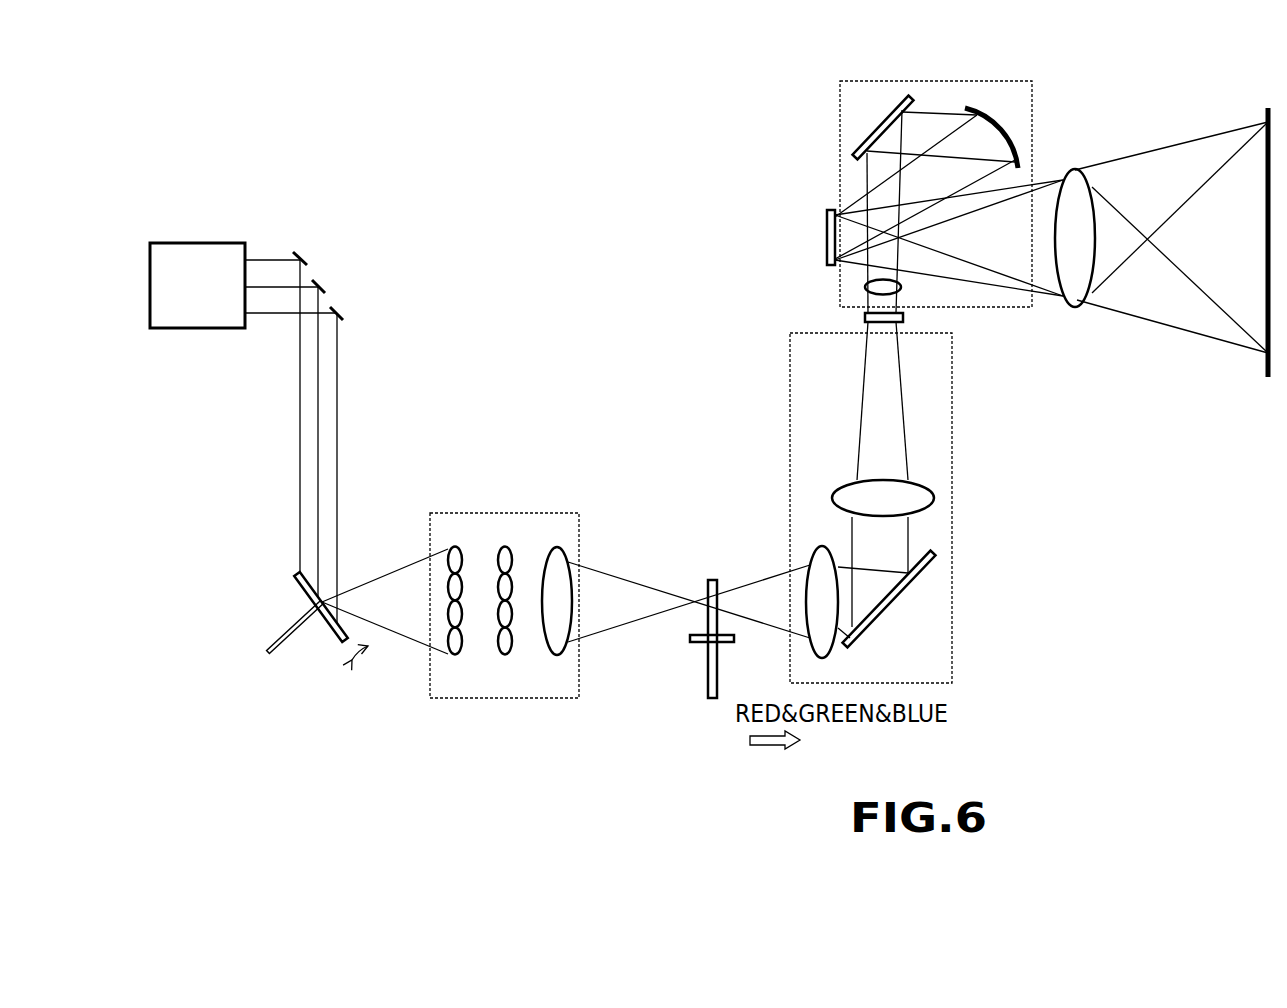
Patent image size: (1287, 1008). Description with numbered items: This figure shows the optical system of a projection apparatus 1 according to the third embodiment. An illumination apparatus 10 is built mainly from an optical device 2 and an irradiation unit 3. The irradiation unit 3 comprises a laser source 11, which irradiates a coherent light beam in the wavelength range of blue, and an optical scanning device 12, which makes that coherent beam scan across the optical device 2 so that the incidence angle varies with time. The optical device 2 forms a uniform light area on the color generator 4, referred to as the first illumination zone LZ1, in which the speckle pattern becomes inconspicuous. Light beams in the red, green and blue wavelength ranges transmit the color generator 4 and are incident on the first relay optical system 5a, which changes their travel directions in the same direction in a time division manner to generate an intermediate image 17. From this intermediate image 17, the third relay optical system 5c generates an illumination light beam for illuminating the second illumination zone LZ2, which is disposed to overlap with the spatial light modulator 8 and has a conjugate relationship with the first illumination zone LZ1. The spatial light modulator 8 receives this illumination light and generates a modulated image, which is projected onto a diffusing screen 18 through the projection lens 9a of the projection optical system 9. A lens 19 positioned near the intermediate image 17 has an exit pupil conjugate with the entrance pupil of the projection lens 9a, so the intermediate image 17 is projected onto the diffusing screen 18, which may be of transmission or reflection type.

The projection apparatus 1 is at (256, 724).
The optical device 2 is at (497, 513).
The irradiation unit 3 is at (223, 410).
The color generator 4 is at (712, 700).
The first relay optical system 5a is at (952, 630).
The third relay optical system 5c is at (898, 197).
The spatial light modulator 8 is at (828, 218).
The projection optical system 9 is at (1161, 223).
The projection lens 9a is at (1075, 190).
The illumination apparatus 10 is at (375, 333).
The laser source 11 is at (177, 243).
The optical scanning device 12 is at (305, 596).
The intermediate image 17 is at (862, 318).
The diffusing screen 18 is at (1265, 362).
The lens 19 is at (870, 287).
The first illumination zone LZ1 is at (709, 592).
The second illumination zone LZ2 is at (827, 232).